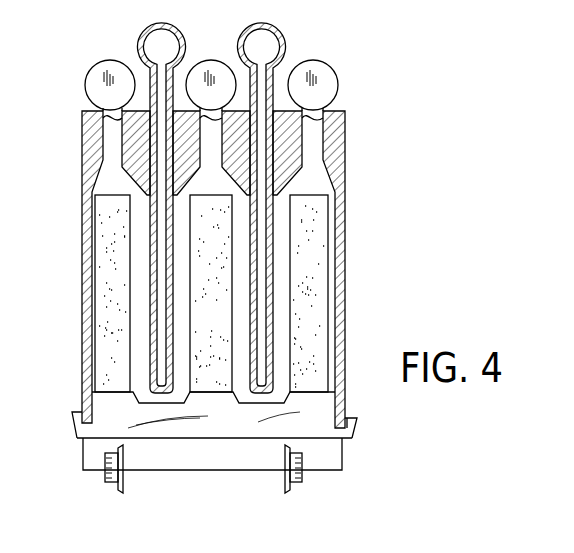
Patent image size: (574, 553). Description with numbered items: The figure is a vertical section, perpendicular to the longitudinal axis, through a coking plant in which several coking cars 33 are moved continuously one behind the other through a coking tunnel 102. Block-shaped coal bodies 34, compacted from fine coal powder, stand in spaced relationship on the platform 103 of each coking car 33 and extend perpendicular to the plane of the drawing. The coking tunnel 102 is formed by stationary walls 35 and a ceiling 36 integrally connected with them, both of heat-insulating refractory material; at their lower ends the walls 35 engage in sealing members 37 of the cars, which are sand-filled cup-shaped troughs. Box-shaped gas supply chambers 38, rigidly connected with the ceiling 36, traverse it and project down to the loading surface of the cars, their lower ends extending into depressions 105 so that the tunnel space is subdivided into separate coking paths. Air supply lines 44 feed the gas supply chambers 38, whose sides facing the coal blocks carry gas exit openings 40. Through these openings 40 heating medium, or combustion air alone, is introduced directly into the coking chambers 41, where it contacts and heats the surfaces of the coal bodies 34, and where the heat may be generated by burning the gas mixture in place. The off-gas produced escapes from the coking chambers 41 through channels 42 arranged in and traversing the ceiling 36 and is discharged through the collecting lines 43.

The coking tunnel 102 is at (350, 100).
The coking car 33 is at (314, 421).
The coal body 34 is at (107, 279).
The wall 35 is at (346, 218).
The ceiling 36 is at (346, 141).
The sealing member 37 is at (82, 424).
The gas supply chamber 38 is at (261, 348).
The gas exit opening 40 is at (273, 295).
The coking chamber 41 is at (181, 238).
The channel 42 is at (113, 136).
The collecting line 43 is at (101, 72).
The air supply line 44 is at (156, 33).
The platform 103 is at (187, 428).
The depression 105 is at (277, 398).